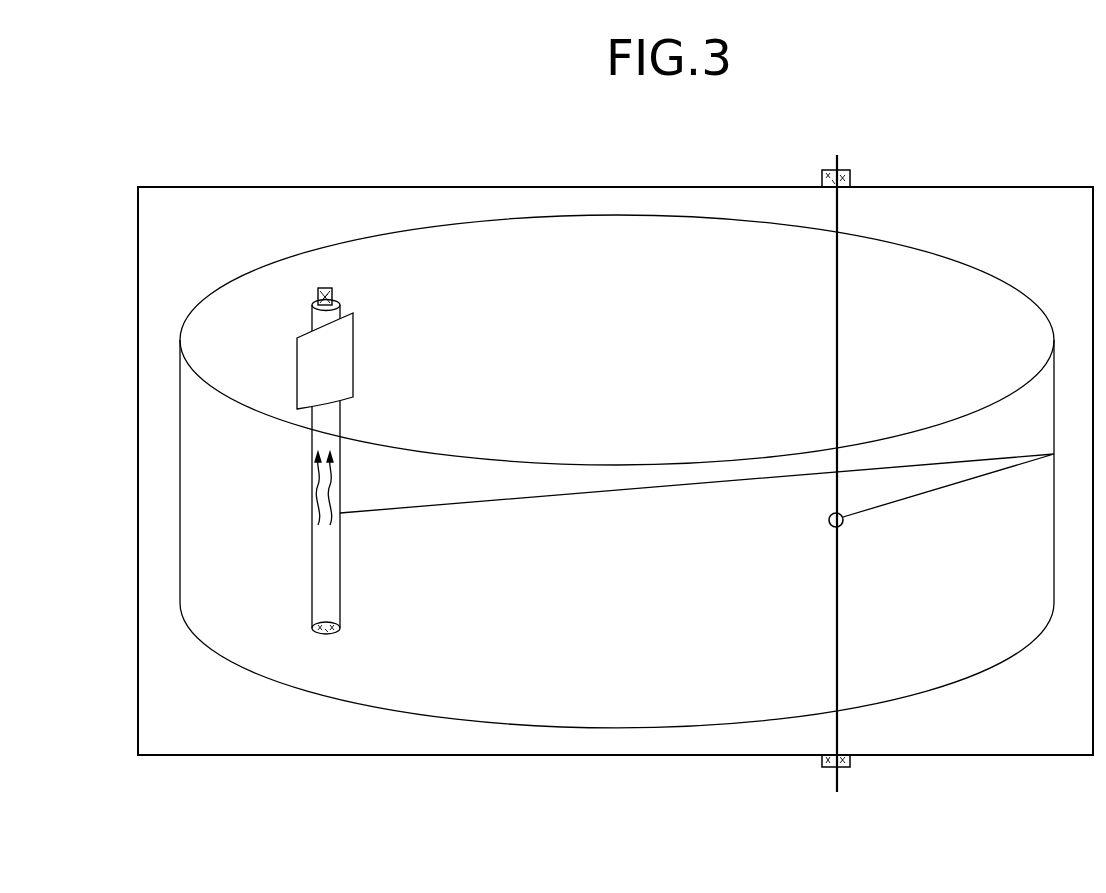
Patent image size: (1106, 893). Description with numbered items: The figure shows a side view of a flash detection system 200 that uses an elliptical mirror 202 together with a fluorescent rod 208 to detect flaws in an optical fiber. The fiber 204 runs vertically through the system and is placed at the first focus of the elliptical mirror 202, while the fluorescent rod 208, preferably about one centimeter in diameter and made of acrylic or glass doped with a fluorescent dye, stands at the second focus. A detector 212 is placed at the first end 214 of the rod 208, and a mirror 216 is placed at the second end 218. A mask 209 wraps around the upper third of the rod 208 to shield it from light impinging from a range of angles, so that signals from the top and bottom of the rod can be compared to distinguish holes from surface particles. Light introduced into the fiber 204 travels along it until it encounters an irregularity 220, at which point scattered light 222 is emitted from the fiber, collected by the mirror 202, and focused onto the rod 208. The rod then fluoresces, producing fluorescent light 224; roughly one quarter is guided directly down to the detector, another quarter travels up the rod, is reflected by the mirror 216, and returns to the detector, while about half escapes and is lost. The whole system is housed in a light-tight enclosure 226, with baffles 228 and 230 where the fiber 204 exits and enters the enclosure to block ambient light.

The detection system 200 is at (199, 282).
The elliptical mirror 202 is at (1041, 308).
The fiber 204 is at (838, 358).
The fluorescent rod 208 is at (341, 422).
The mask 209 is at (354, 349).
The detector 212 is at (326, 282).
The first end 214 is at (311, 305).
The mirror 216 is at (335, 645).
The second end 218 is at (312, 630).
The irregularity 220 is at (844, 518).
The scattered light 222 is at (938, 488).
The fluorescent light 224 is at (311, 504).
The light-tight enclosure 226 is at (305, 756).
The baffle 228 is at (851, 759).
The baffle 230 is at (851, 180).